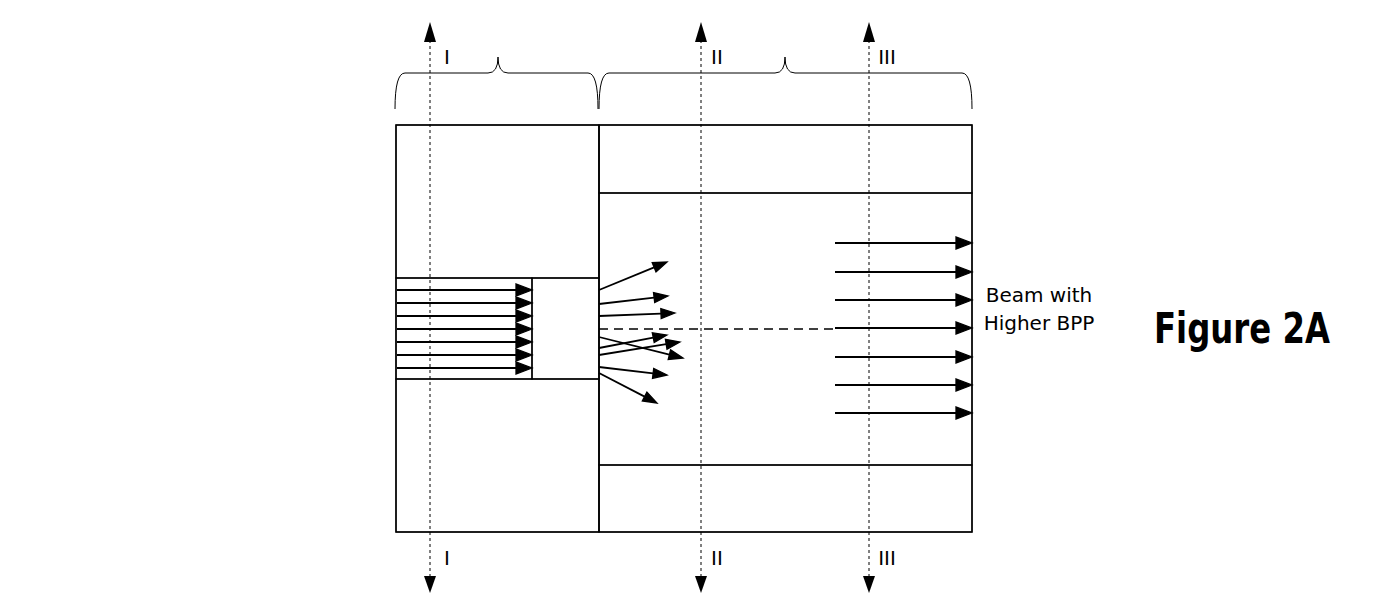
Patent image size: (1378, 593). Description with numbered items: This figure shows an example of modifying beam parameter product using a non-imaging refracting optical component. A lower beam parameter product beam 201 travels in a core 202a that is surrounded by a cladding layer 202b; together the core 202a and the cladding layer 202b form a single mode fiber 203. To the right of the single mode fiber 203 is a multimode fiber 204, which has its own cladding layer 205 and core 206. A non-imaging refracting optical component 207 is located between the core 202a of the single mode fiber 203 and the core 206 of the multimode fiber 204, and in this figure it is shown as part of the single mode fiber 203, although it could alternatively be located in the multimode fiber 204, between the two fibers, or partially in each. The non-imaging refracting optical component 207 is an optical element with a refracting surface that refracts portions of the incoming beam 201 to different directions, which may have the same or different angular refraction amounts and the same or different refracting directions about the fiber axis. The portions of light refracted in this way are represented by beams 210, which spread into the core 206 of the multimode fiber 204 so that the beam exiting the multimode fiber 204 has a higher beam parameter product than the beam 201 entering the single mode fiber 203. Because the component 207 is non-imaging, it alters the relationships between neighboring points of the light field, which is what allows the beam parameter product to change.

The lower beam parameter product beam 201 is at (388, 290).
The core 202a is at (396, 278).
The cladding layer 202b is at (396, 230).
The single mode fiber 203 is at (496, 67).
The multimode fiber 204 is at (785, 67).
The cladding layer 205 is at (973, 158).
The core 206 is at (973, 227).
The non-imaging refracting optical component 207 is at (550, 342).
The beams 210 is at (605, 365).